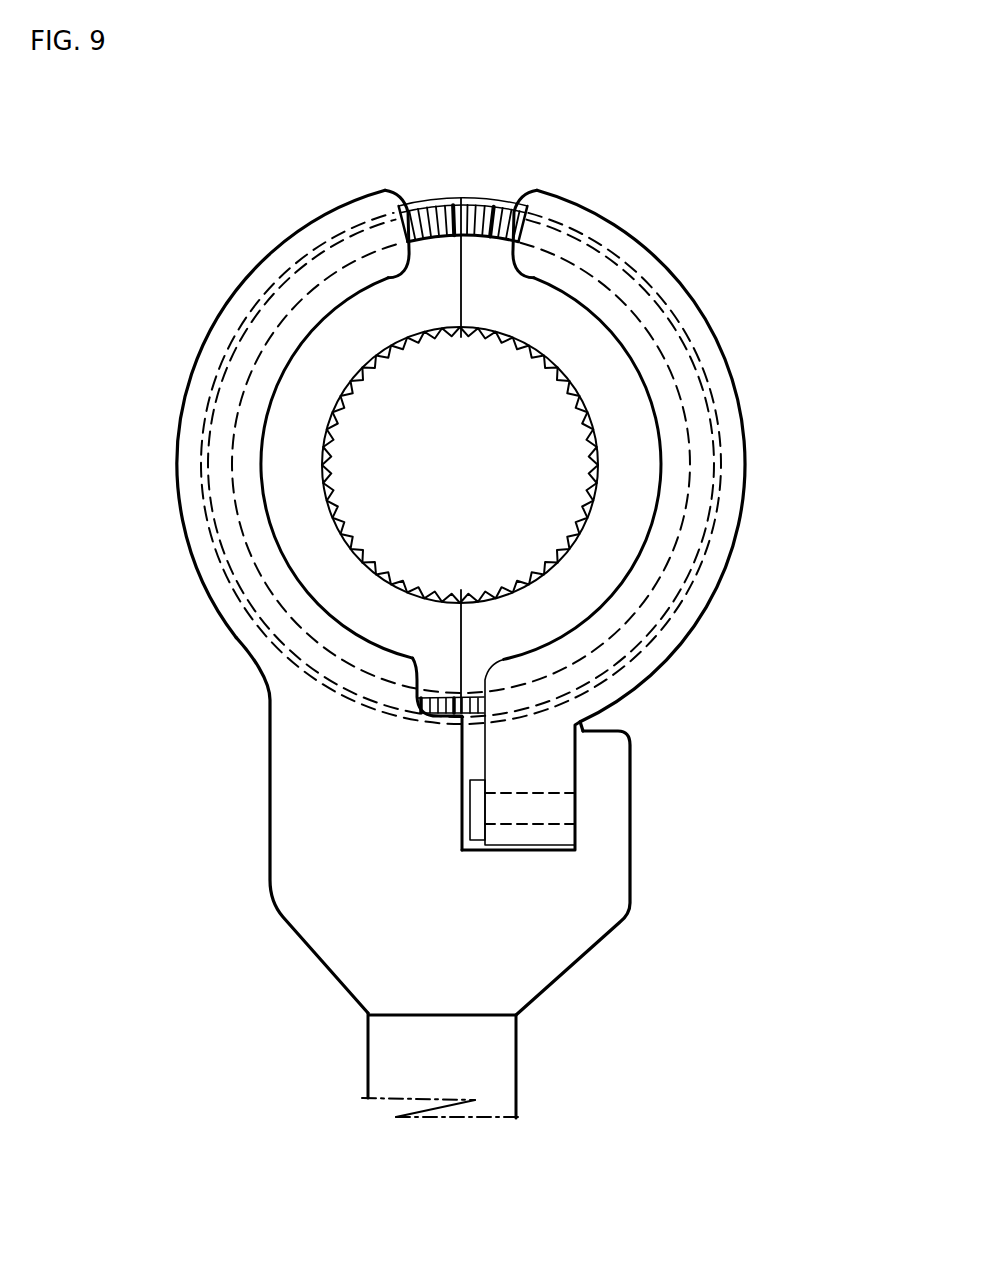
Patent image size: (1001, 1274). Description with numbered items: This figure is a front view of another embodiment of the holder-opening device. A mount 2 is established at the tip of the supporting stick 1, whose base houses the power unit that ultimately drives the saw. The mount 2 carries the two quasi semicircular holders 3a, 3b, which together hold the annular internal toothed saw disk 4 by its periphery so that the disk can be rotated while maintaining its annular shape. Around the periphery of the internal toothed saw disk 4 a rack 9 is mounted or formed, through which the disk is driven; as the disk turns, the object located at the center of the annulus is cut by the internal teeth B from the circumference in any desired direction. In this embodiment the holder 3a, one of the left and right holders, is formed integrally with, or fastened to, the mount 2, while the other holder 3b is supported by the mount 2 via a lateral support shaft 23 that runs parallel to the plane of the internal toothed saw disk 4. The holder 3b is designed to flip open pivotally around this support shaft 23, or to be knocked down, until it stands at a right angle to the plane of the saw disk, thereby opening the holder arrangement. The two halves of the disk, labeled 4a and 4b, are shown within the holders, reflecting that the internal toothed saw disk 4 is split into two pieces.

The supporting stick 1 is at (503, 1058).
The mount 2 is at (306, 868).
The holder 3a is at (180, 446).
The holder 3b is at (733, 470).
The internal toothed saw disk 4 is at (470, 384).
The first band portion 4a is at (437, 253).
The second band portion 4b is at (510, 189).
The rack 9 is at (407, 212).
The lateral support shaft 23 is at (533, 802).
The internal teeth B is at (415, 343).